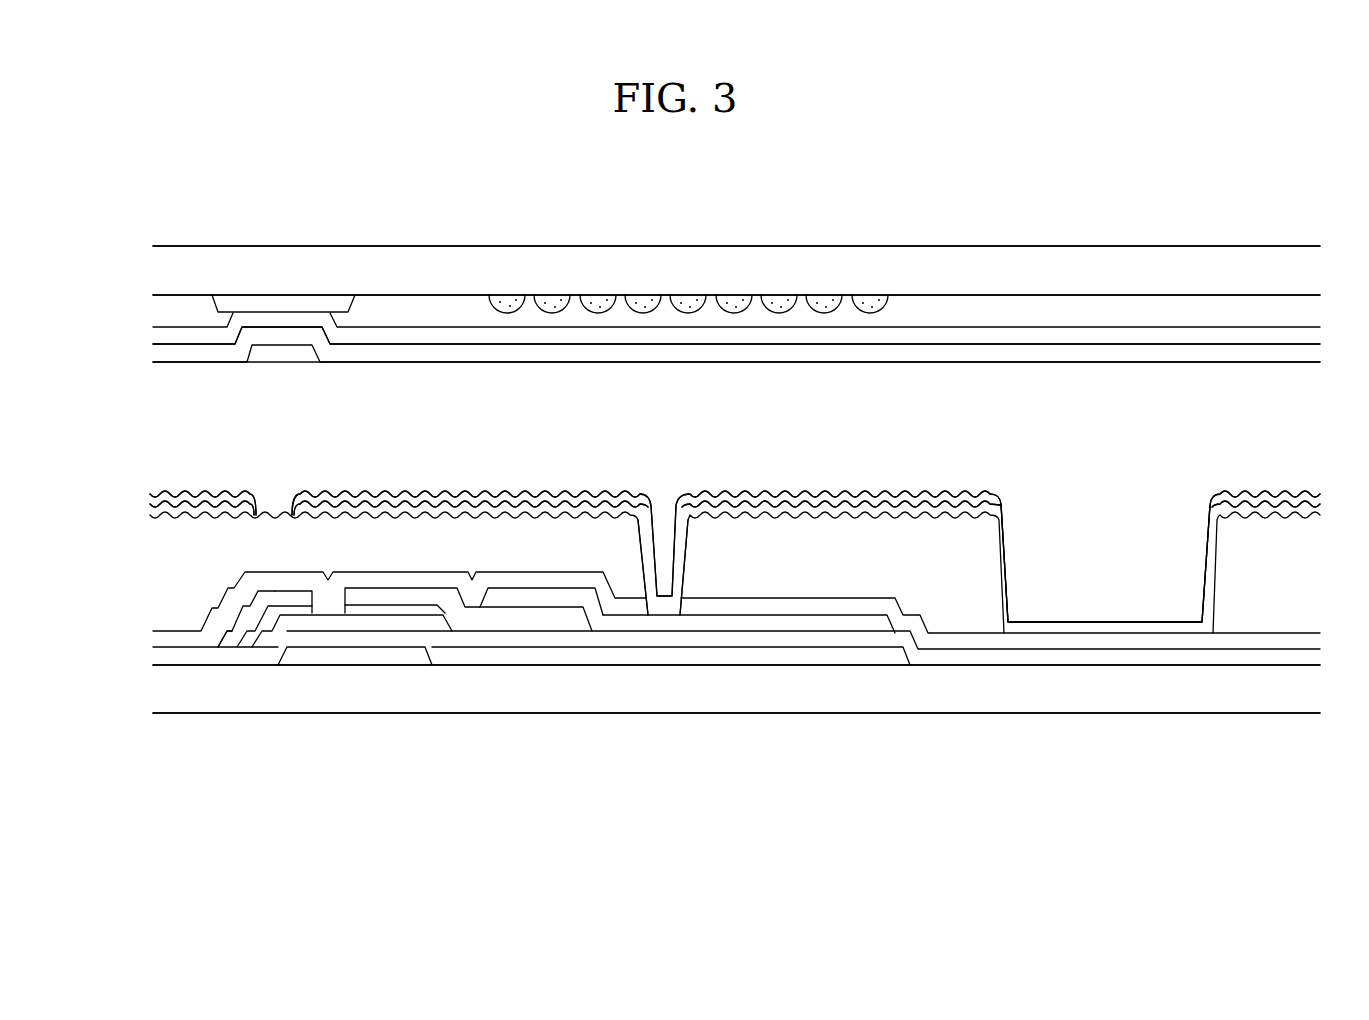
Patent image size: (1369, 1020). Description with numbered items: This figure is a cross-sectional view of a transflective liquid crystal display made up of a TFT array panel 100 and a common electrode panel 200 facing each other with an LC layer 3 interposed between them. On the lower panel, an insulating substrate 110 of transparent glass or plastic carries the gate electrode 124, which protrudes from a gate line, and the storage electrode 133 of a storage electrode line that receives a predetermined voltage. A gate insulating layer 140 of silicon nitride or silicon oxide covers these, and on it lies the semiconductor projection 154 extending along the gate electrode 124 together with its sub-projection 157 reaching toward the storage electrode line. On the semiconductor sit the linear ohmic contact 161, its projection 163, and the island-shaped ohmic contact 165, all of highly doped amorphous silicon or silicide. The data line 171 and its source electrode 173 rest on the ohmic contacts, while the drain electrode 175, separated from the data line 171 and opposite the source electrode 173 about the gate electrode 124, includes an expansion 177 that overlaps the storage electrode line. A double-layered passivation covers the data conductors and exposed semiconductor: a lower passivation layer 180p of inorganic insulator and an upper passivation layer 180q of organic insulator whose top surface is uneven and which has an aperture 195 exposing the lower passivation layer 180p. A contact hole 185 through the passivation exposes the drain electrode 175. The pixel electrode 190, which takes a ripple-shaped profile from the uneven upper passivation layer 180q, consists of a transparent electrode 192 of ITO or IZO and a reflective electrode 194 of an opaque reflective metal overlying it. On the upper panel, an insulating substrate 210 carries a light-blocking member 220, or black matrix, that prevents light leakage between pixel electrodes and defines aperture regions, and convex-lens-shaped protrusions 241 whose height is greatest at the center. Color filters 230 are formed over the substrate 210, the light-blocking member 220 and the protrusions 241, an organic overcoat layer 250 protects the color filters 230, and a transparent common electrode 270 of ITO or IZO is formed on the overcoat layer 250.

The common electrode panel 200 is at (150, 268).
The insulating substrate 210 is at (328, 270).
The light-blocking member 220 is at (262, 305).
The color filter 230 is at (178, 310).
The overcoat layer 250 is at (661, 333).
The common electrode 270 is at (573, 353).
The protrusion 241 is at (824, 314).
The LC layer 3 is at (165, 419).
The TFT array panel 100 is at (145, 692).
The insulating substrate 110 is at (1044, 703).
The gate electrode 124 is at (343, 657).
The storage electrode 133 is at (822, 658).
The gate insulating layer 140 is at (941, 660).
The projection 154 is at (318, 625).
The sub-projection 157 is at (565, 630).
The linear ohmic contact 161 is at (257, 648).
The projection 163 is at (278, 636).
The island-shaped ohmic contact 165 is at (375, 612).
The data line 171 is at (233, 640).
The source electrode 173 is at (302, 600).
The drain electrode 175 is at (392, 600).
The expansion 177 is at (739, 625).
The lower passivation layer 180p is at (279, 583).
The upper passivation layer 180q is at (208, 540).
The contact hole 185 is at (660, 525).
The pixel electrode 190 is at (620, 437).
The transparent electrode 192 is at (564, 504).
The reflective electrode 194 is at (600, 498).
The aperture 195 is at (1094, 522).